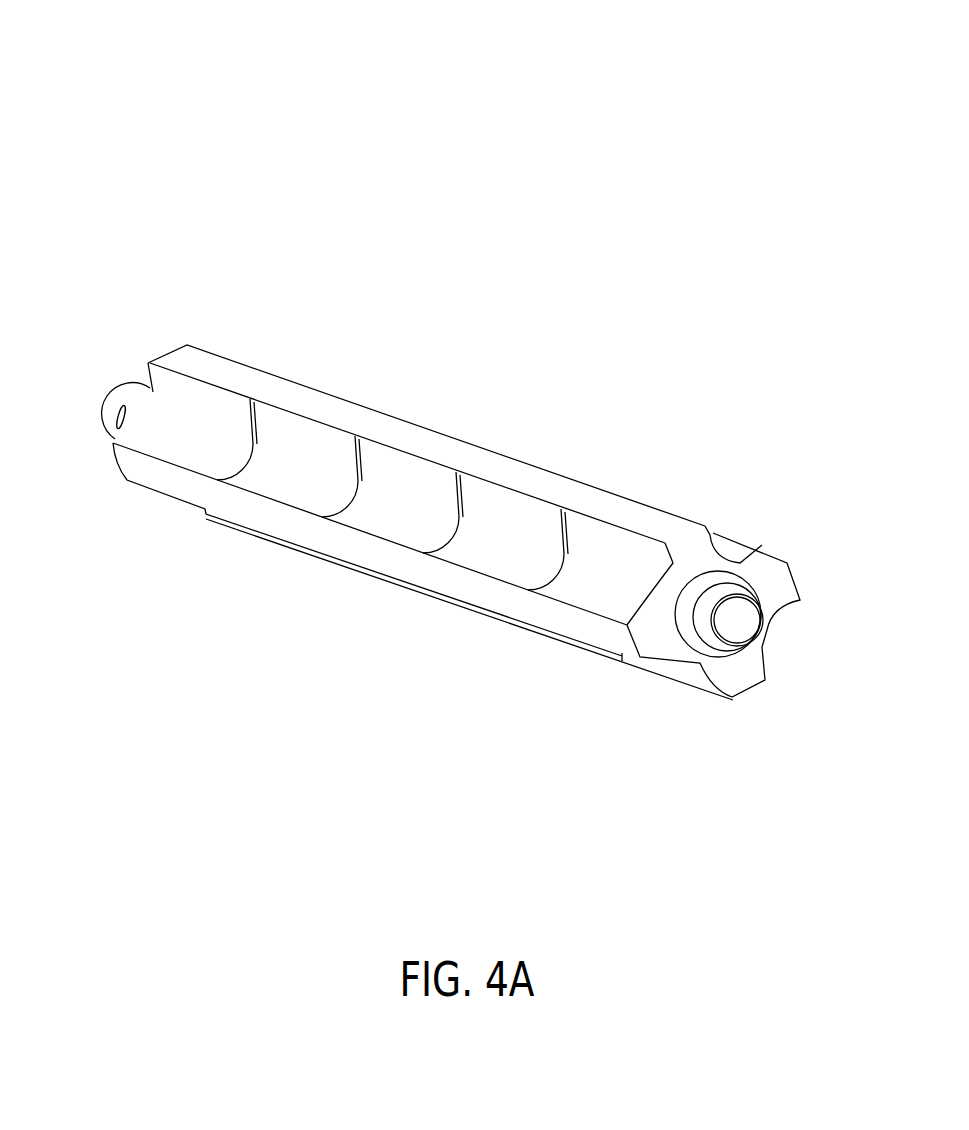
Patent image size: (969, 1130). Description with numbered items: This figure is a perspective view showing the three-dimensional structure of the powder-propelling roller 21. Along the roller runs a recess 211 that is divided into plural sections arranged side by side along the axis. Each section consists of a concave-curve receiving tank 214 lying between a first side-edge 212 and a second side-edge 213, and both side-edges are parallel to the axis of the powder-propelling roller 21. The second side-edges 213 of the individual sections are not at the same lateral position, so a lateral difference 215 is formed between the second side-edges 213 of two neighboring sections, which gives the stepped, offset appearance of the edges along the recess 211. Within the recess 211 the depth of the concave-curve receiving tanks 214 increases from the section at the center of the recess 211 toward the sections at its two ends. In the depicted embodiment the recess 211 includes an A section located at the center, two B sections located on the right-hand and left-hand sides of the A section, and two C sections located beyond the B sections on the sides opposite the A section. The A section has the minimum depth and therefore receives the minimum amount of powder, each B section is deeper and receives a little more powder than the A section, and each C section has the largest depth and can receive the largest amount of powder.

The powder-propelling roller 21 is at (142, 73).
The recess 211 is at (742, 563).
The first side-edge 212 is at (118, 446).
The second side-edge 213 is at (197, 380).
The concave-curve receiving tank 214 is at (185, 440).
The lateral difference 215 is at (250, 398).
The A section A is at (402, 503).
The B section B is at (293, 473).
The C section C is at (202, 445).